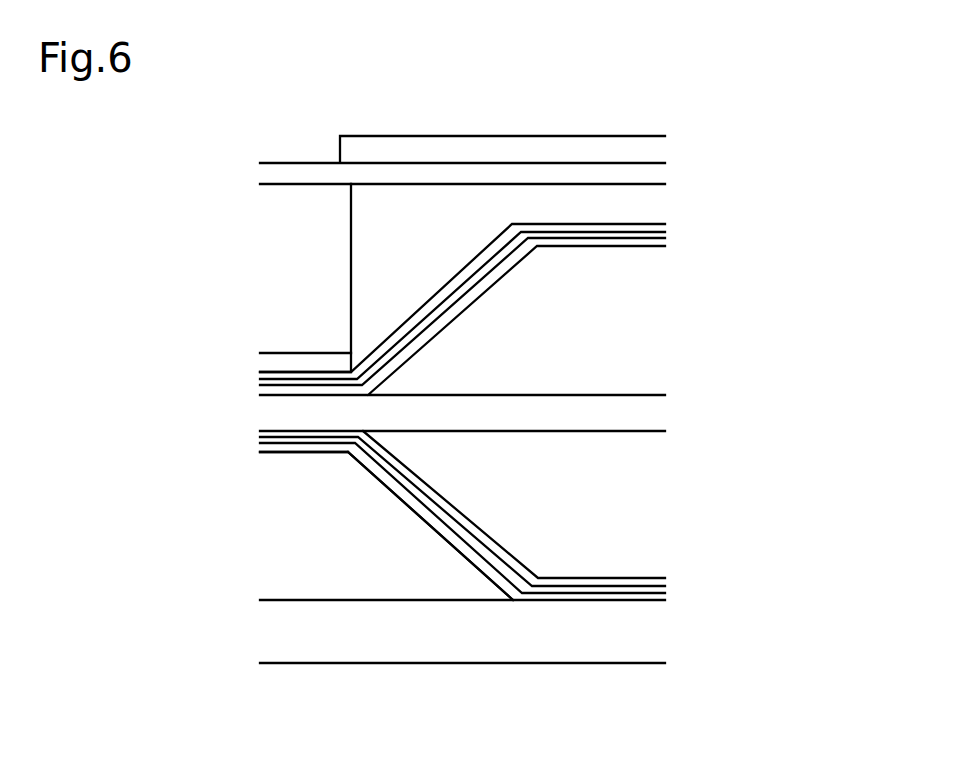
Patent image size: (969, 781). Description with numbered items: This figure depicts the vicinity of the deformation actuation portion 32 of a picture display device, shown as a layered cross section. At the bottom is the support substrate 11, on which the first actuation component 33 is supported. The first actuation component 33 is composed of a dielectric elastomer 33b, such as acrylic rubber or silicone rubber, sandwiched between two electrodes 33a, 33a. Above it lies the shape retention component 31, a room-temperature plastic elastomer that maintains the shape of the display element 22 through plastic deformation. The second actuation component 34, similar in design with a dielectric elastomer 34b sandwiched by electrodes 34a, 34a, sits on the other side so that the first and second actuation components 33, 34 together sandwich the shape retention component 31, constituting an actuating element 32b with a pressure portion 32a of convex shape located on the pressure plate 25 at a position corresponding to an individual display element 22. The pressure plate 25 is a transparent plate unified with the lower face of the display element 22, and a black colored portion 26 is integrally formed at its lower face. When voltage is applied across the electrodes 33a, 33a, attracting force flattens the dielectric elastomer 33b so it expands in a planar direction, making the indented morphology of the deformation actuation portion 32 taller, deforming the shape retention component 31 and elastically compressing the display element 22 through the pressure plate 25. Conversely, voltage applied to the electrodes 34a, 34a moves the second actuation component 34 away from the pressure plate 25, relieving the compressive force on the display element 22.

The support substrate 11 is at (262, 630).
The display element 22 is at (273, 264).
The pressure plate 25 is at (265, 358).
The colored portion 26 is at (262, 372).
The shape retention component 31 is at (272, 415).
The deformation actuation portion 32 is at (567, 465).
The pressure portion 32a is at (312, 452).
The actuating element 32b is at (388, 478).
The first actuation component 33 is at (535, 538).
The electrode 33a is at (665, 584).
The dielectric elastomer 33b is at (665, 591).
The second actuation component 34 is at (535, 292).
The electrode 34a is at (665, 231).
The dielectric elastomer 34b is at (665, 239).